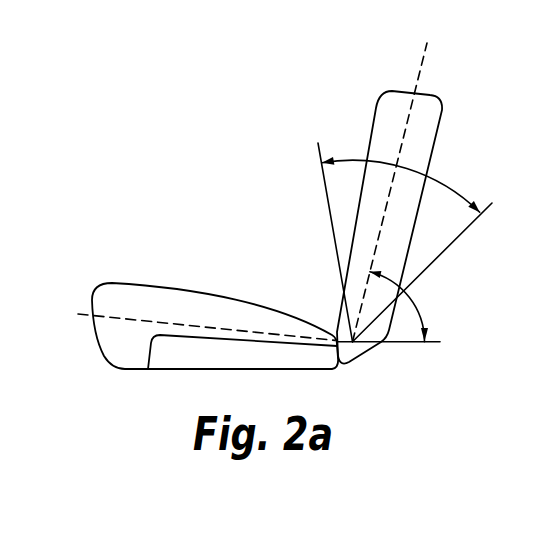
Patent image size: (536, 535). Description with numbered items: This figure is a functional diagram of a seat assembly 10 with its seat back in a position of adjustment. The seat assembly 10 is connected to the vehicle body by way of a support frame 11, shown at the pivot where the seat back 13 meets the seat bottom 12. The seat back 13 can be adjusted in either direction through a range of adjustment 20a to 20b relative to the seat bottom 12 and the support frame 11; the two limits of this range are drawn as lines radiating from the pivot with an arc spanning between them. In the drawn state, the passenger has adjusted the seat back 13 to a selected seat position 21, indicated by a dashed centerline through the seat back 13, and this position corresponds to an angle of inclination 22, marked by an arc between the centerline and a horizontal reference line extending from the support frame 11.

The seat assembly 10 is at (204, 188).
The support frame 11 is at (335, 369).
The seat bottom 12 is at (108, 284).
The seat back 13 is at (437, 132).
The range of adjustment limit 20a is at (439, 261).
The range of adjustment limit 20b is at (391, 231).
The selected seat position 21 is at (423, 50).
The angle of inclination 22 is at (407, 291).